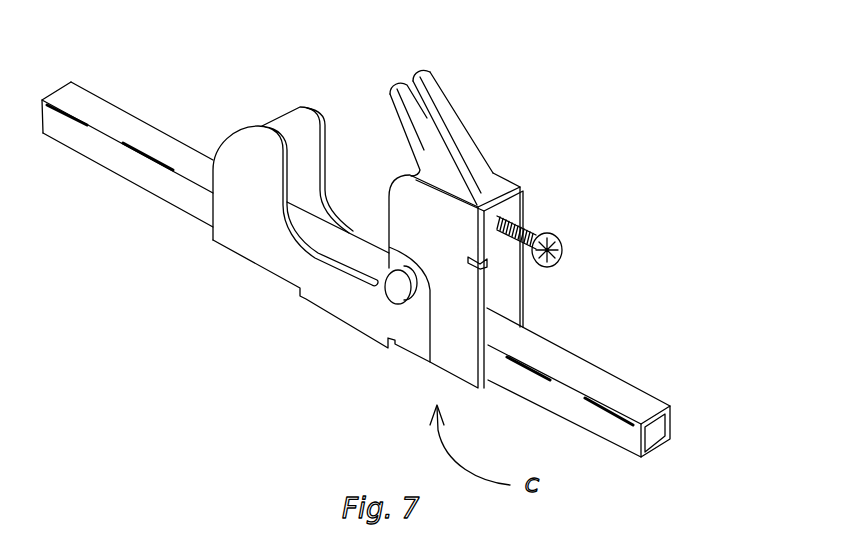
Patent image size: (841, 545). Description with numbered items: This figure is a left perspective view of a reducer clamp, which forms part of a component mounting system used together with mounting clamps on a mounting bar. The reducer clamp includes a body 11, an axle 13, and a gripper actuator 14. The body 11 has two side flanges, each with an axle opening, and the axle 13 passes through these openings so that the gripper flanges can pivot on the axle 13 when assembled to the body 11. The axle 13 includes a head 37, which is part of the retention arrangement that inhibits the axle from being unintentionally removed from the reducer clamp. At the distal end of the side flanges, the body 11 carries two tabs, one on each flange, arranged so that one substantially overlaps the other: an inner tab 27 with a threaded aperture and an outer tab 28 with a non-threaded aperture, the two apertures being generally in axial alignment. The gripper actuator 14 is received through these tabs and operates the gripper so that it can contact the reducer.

The body 11 is at (362, 320).
The axle 13 is at (383, 250).
The gripper actuator 14 is at (562, 257).
The inner tab 27 is at (466, 260).
The outer tab 28 is at (513, 208).
The head 37 is at (385, 292).